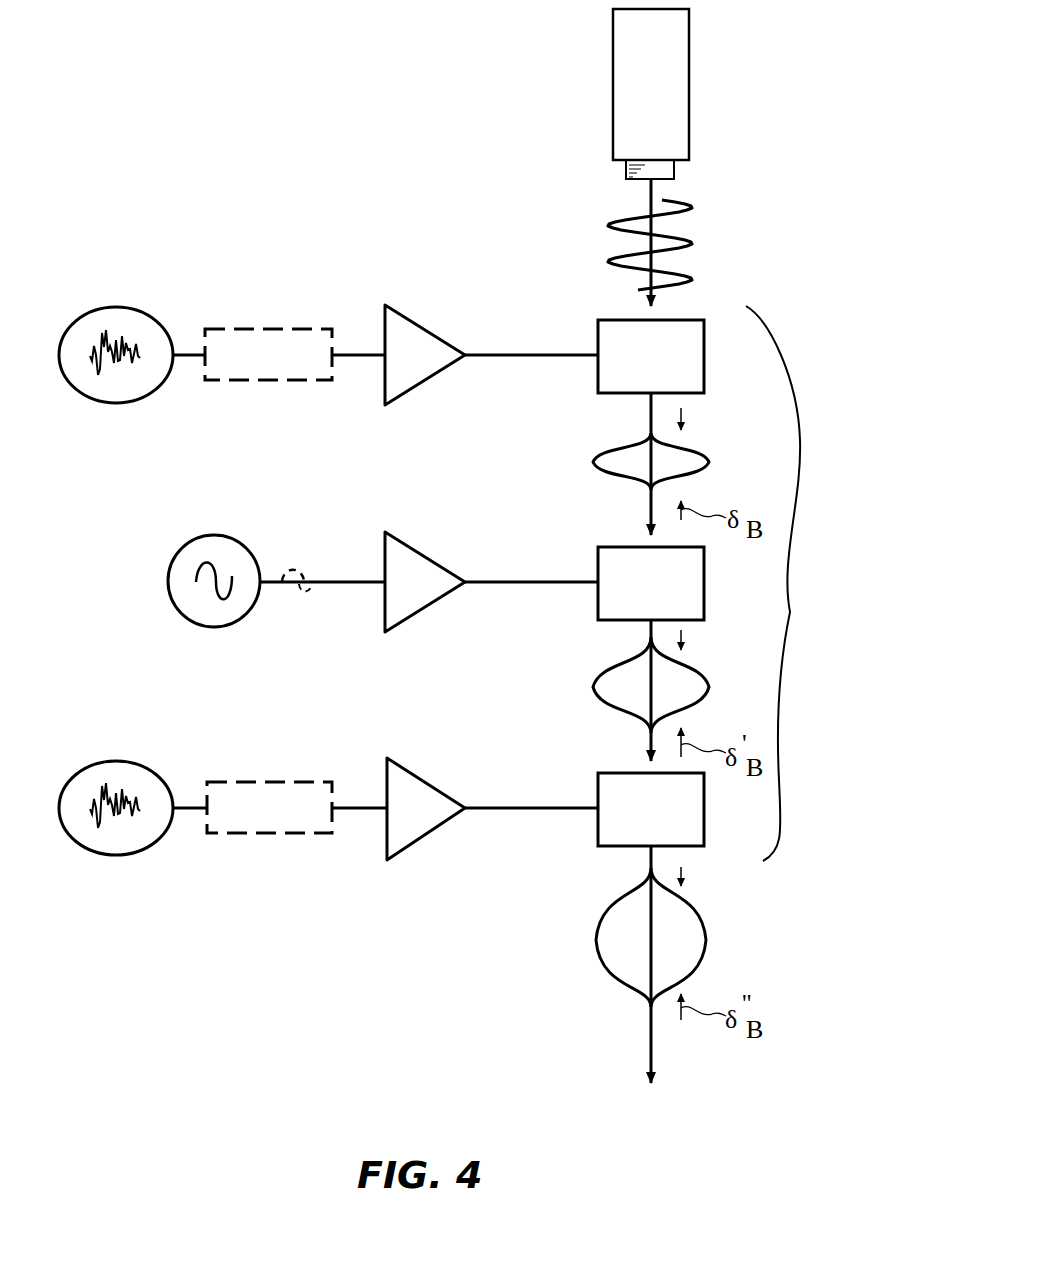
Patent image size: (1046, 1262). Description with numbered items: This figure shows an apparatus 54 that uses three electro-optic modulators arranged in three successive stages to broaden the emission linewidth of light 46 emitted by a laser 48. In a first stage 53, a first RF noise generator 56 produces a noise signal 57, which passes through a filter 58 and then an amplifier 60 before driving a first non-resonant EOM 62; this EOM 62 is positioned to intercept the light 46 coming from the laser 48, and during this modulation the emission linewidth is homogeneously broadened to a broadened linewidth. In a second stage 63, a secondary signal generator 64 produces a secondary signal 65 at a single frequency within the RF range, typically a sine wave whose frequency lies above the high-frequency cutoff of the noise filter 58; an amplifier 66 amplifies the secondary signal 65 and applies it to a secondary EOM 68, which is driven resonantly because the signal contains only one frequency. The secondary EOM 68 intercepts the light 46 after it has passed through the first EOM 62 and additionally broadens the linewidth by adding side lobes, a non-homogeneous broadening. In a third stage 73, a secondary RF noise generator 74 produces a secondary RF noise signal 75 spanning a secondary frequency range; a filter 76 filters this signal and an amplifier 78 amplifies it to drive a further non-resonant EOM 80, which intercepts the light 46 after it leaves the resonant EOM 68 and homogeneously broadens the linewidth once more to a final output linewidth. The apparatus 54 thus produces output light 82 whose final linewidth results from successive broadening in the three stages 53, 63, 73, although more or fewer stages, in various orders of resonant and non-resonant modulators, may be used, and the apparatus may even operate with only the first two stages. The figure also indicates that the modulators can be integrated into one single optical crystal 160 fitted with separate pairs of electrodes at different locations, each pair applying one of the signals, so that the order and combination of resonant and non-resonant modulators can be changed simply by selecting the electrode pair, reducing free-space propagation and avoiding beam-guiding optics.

The apparatus 54 is at (104, 103).
The laser 48 is at (689, 95).
The light 46 is at (612, 232).
The first RF noise generator 56 is at (158, 392).
The noise signal 57 is at (116, 330).
The filter 58 is at (266, 328).
The amplifier 60 is at (426, 330).
The first non-resonant EOM 62 is at (704, 352).
The first stage 53 is at (818, 338).
The secondary signal generator 64 is at (240, 620).
The secondary signal 65 is at (306, 595).
The amplifier 66 is at (430, 560).
The secondary EOM 68 is at (704, 579).
The second stage 63 is at (818, 587).
The optical crystal 160 is at (790, 612).
The secondary RF noise generator 74 is at (160, 845).
The secondary RF noise signal 75 is at (116, 784).
The filter 76 is at (266, 781).
The amplifier 78 is at (426, 786).
The EOM 80 is at (704, 806).
The third stage 73 is at (812, 828).
The output light 82 is at (650, 1046).